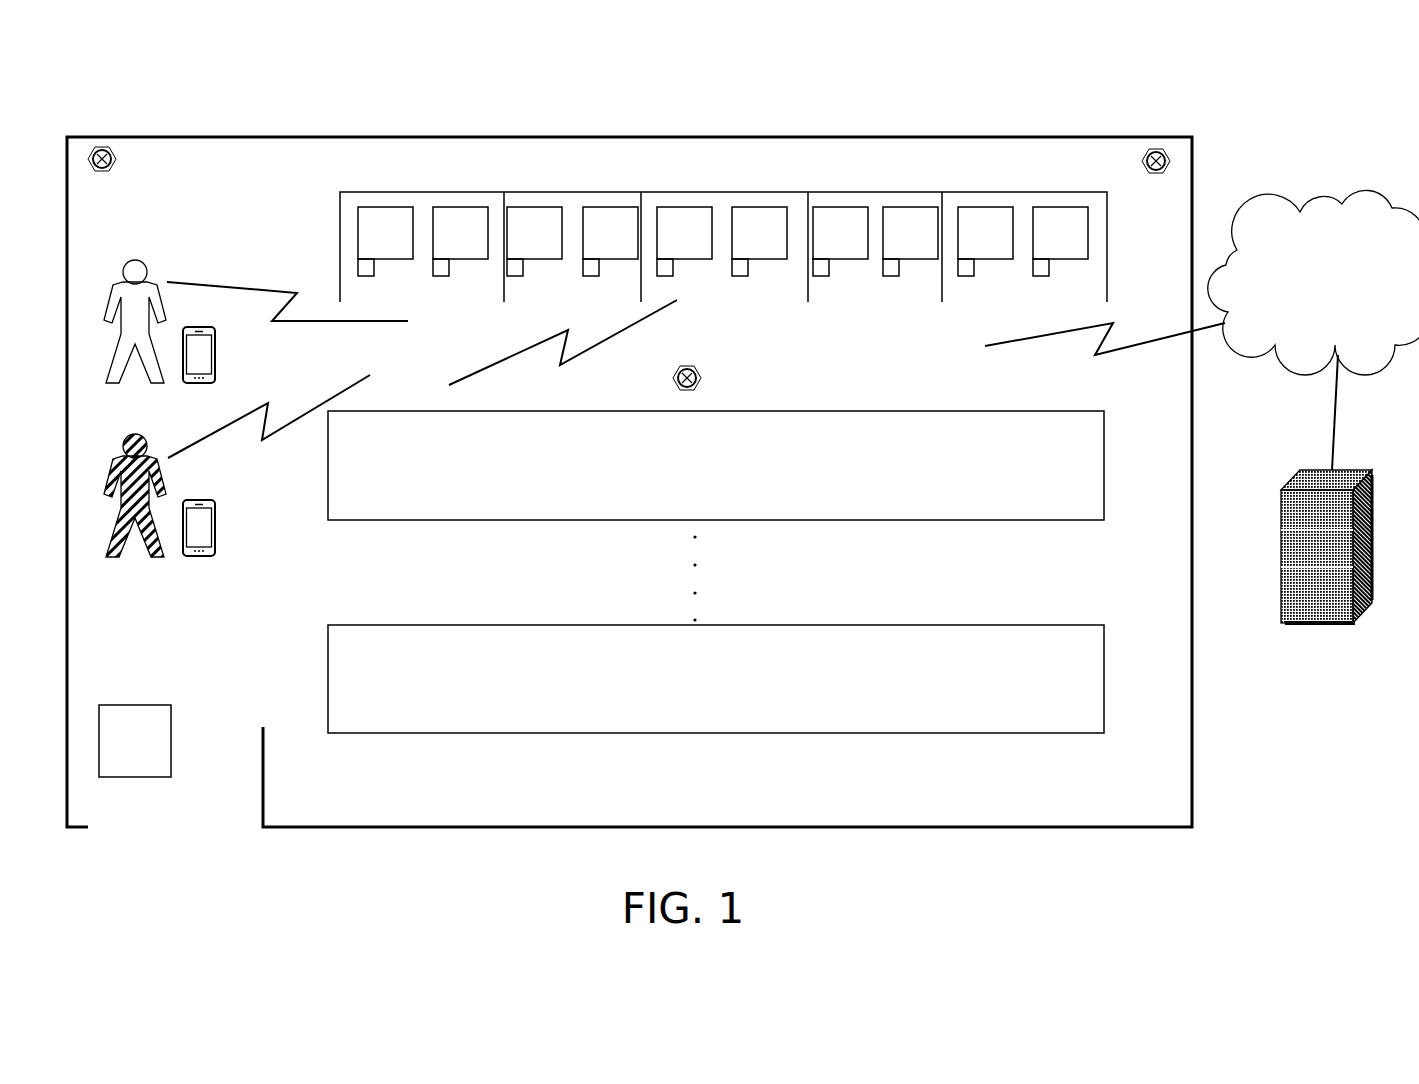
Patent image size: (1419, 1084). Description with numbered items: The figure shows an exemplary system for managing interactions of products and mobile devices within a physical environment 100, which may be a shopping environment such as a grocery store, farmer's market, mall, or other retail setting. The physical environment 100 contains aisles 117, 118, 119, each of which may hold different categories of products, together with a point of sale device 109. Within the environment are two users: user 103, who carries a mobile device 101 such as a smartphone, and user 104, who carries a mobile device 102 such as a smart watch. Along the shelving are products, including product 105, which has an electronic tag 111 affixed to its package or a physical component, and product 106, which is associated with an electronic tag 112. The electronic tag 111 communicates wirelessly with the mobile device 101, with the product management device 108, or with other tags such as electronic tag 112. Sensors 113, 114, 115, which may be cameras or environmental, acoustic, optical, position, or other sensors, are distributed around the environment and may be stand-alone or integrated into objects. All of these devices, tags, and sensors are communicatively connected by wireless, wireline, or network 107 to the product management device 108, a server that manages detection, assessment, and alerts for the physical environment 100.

The physical environment 100 is at (393, 137).
The mobile device 101 is at (200, 327).
The mobile device 102 is at (200, 500).
The user 103 is at (134, 258).
The user 104 is at (136, 432).
The product 105 is at (372, 207).
The product 106 is at (752, 207).
The network 107 is at (1308, 287).
The product management device 108 is at (1316, 470).
The point of sale device 109 is at (138, 705).
The electronic tag 111 is at (365, 277).
The electronic tag 112 is at (740, 277).
The sensor 113 is at (690, 366).
The sensor 114 is at (1160, 145).
The sensor 115 is at (102, 143).
The aisle 117 is at (1128, 252).
The aisle 118 is at (1126, 470).
The aisle 119 is at (1123, 705).